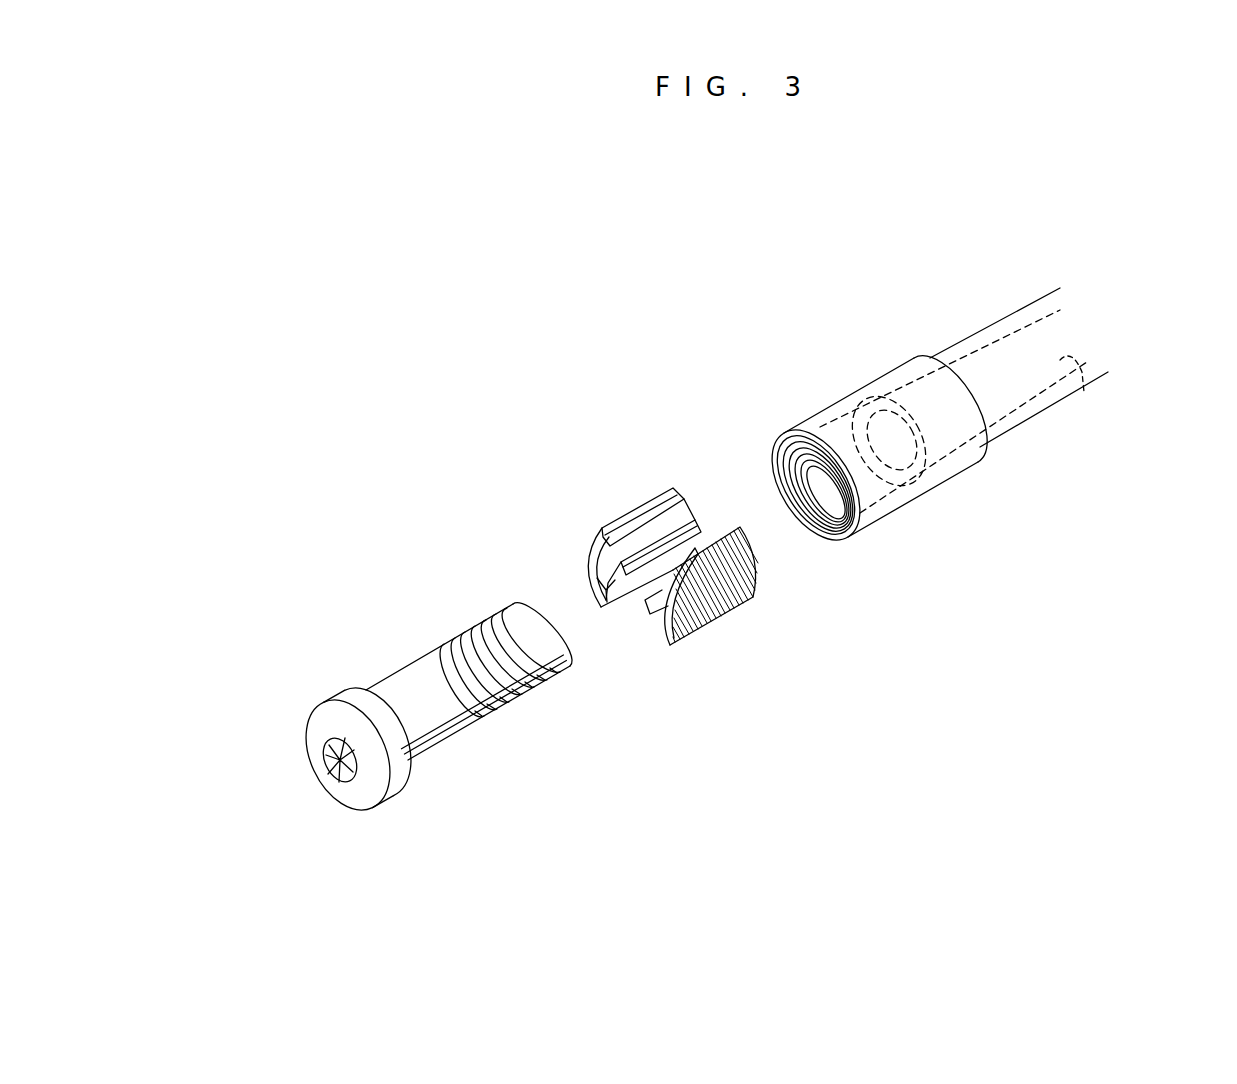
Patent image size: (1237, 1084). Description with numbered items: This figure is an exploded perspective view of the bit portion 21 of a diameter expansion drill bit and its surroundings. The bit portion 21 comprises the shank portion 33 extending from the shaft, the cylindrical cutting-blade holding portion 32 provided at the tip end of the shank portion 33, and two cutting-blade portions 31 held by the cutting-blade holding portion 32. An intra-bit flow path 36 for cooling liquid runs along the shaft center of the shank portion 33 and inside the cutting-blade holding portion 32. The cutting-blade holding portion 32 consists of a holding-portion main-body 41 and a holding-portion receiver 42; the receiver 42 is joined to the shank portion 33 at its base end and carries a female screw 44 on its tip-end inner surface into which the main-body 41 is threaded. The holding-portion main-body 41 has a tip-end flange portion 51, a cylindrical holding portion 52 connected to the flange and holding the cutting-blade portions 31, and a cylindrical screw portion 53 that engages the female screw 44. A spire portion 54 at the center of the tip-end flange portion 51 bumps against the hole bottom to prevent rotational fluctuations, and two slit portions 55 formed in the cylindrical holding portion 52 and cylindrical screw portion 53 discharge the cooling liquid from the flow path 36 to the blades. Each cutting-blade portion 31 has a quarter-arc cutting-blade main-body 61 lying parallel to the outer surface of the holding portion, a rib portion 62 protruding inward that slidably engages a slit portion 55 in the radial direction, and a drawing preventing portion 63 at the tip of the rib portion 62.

The bit portion 21 is at (648, 303).
The cutting-blade portion 31 is at (615, 492).
The cutting-blade holding portion 32 is at (503, 847).
The shank portion 33 is at (1025, 305).
The intra-bit flow path 36 is at (1085, 385).
The holding-portion main-body 41 is at (428, 656).
The holding-portion receiver 42 is at (918, 492).
The female screw 44 is at (832, 545).
The tip-end flange portion 51 is at (392, 787).
The cylindrical holding portion 52 is at (447, 745).
The cylindrical screw portion 53 is at (522, 702).
The spire portion 54 is at (325, 770).
The slit portion 55 is at (573, 657).
The cutting-blade main-body 61 is at (656, 490).
The rib portion 62 is at (677, 522).
The drawing preventing portion 63 is at (702, 522).